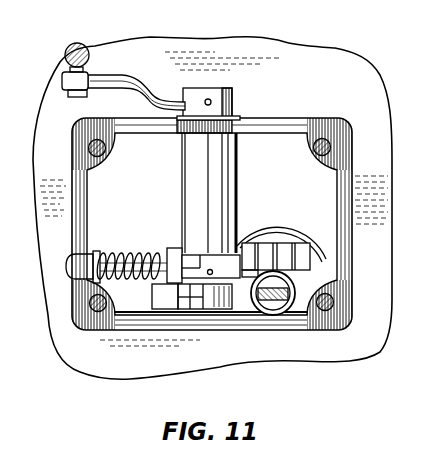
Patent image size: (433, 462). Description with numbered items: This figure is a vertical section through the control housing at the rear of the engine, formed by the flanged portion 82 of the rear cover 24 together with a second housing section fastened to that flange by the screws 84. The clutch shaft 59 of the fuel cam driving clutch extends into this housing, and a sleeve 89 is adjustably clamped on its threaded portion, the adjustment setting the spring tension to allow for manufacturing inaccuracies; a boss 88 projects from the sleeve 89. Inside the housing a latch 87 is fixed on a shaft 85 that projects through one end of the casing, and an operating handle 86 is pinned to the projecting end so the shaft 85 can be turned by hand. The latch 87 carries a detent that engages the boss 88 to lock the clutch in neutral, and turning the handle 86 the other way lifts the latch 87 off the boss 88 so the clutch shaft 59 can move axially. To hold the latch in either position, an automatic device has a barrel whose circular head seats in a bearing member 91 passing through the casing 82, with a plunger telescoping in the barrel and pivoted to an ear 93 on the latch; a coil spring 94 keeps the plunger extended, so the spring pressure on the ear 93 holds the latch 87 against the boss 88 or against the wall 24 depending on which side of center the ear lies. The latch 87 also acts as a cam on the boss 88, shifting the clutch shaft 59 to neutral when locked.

The rear cover 24 is at (370, 323).
The clutch shaft 59 is at (285, 300).
The flanged portion 82 is at (285, 128).
The screws 84 is at (329, 147).
The shaft 85 is at (208, 88).
The operating handle 86 is at (163, 100).
The latch 87 is at (162, 300).
The boss 88 is at (222, 298).
The sleeve 89 is at (300, 278).
The bearing member 91 is at (68, 263).
The ear 93 is at (174, 255).
The coil spring 94 is at (130, 255).